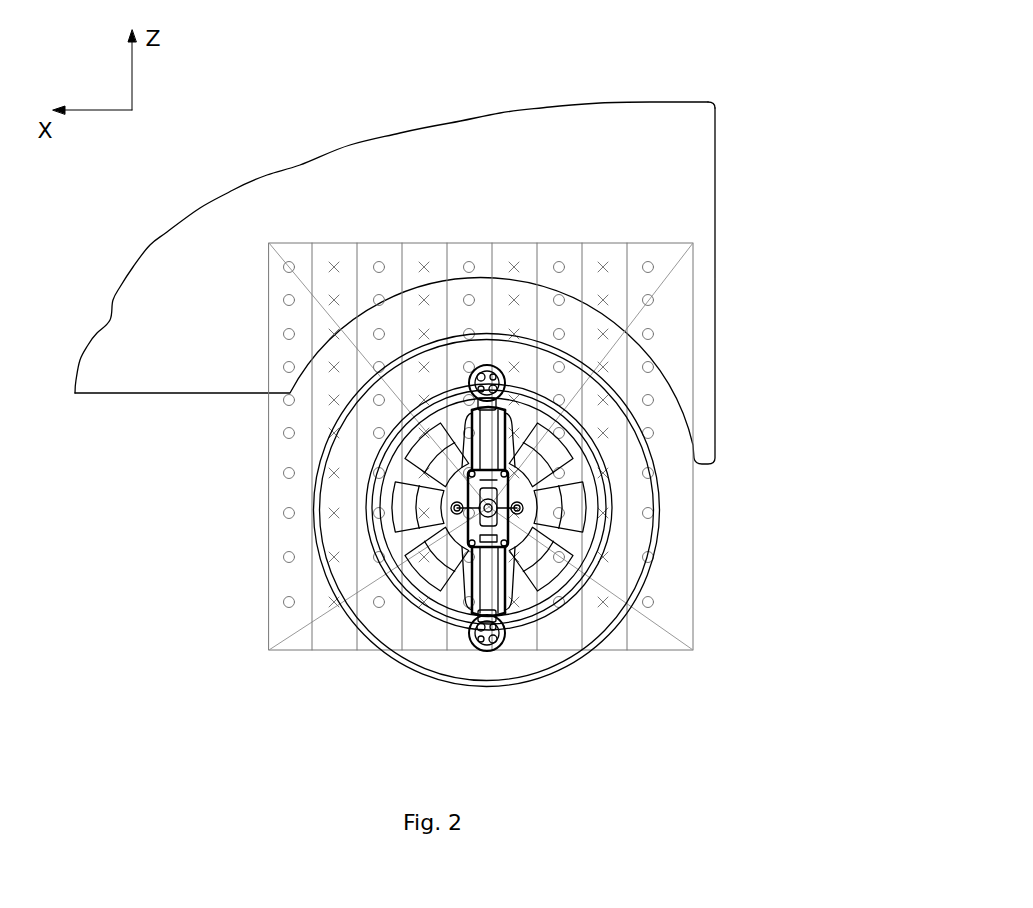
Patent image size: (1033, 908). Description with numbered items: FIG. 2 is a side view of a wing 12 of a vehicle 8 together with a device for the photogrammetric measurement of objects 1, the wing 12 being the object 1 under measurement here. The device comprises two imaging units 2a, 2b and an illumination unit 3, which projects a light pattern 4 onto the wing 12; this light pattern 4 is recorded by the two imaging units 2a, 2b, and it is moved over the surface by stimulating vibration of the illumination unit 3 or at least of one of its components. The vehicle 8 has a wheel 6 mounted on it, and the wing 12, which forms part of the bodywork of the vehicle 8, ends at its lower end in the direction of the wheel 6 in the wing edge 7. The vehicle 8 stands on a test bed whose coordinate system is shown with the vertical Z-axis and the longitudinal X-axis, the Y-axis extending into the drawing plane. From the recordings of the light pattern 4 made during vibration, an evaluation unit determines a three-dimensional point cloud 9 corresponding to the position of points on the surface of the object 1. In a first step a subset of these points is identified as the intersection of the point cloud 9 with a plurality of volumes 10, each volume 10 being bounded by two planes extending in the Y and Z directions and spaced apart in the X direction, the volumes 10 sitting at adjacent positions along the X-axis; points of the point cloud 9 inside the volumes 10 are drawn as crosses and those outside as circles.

The object 1 is at (527, 493).
The imaging unit 2a is at (503, 378).
The imaging unit 2b is at (497, 638).
The illumination unit 3 is at (520, 510).
The light pattern 4 is at (270, 562).
The wheel 6 is at (340, 452).
The wing edge 7 is at (360, 312).
The vehicle 8 is at (261, 125).
The 3D point cloud 9 is at (603, 268).
The volume 10 is at (597, 245).
The wing 12 is at (588, 150).